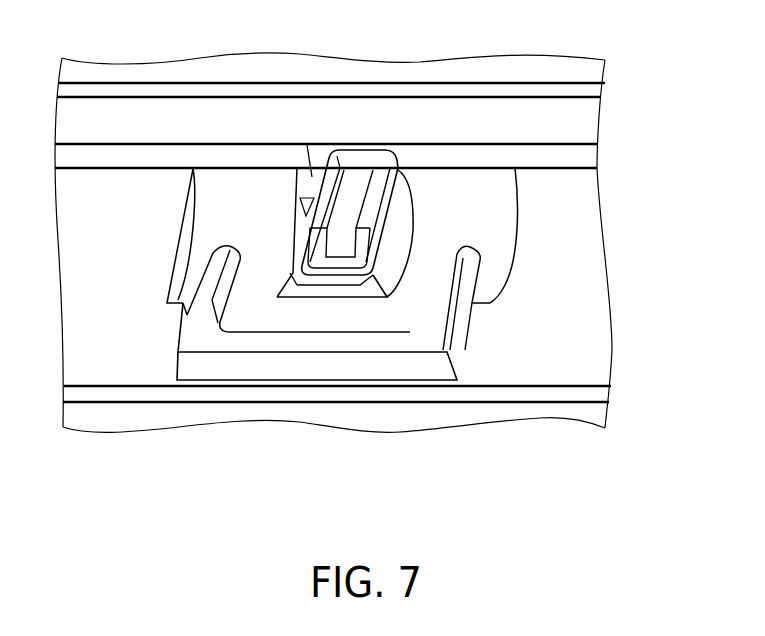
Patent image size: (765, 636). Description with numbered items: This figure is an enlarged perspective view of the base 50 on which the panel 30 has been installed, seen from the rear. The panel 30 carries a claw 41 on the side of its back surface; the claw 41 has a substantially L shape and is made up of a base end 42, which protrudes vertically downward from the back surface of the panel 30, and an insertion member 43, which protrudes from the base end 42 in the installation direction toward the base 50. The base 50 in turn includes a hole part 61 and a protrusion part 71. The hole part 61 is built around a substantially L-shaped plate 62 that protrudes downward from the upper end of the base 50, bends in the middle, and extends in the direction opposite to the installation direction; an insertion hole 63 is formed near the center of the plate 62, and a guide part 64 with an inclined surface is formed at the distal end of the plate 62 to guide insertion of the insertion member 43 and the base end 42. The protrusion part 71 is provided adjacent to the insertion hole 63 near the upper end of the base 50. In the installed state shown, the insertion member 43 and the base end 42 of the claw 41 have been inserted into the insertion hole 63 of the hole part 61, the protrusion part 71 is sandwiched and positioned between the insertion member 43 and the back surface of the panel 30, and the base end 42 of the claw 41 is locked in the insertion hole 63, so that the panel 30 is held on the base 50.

The panel 30 is at (417, 157).
The claw 41 is at (353, 148).
The base end 42 is at (340, 278).
The insertion member 43 is at (367, 178).
The base 50 is at (143, 401).
The hole part 61 is at (277, 333).
The plate 62 is at (417, 313).
The insertion hole 63 is at (388, 258).
The guide part 64 is at (293, 288).
The protrusion part 71 is at (308, 160).